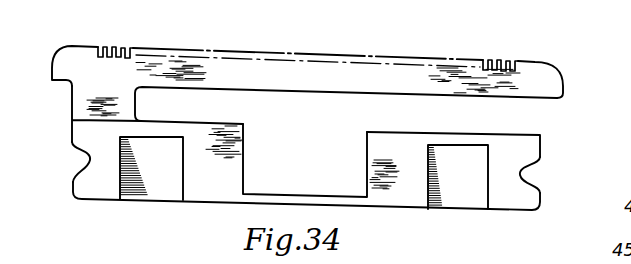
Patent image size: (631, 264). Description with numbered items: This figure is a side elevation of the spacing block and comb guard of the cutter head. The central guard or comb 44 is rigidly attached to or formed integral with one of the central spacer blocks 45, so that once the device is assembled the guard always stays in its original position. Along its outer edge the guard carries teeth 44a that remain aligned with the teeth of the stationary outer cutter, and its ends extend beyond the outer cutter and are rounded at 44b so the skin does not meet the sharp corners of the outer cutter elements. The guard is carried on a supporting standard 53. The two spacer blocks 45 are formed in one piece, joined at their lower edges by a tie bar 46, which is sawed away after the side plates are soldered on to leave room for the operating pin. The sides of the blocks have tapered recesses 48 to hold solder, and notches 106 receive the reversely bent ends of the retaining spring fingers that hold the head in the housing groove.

The central guard or comb 44 is at (334, 78).
The teeth of the guard 44a is at (500, 58).
The rounded ends of the guard 44b is at (62, 62).
The central spacer blocks 45 is at (199, 203).
The tie bar 46 is at (296, 196).
The tapered recesses 48 is at (162, 182).
The supporting standard 53 is at (83, 102).
The notches 106 is at (82, 158).